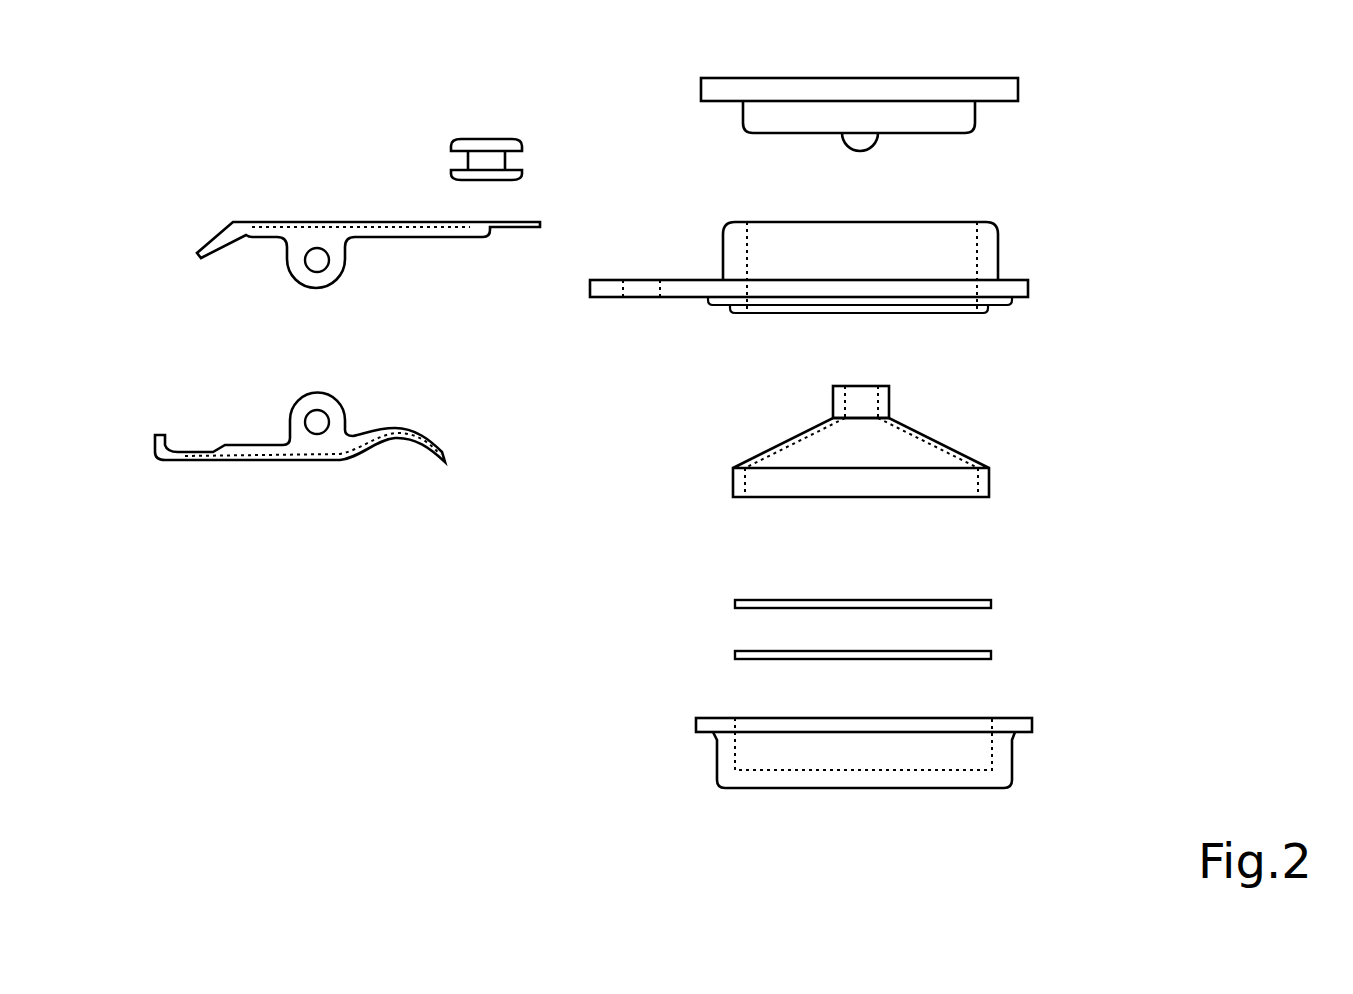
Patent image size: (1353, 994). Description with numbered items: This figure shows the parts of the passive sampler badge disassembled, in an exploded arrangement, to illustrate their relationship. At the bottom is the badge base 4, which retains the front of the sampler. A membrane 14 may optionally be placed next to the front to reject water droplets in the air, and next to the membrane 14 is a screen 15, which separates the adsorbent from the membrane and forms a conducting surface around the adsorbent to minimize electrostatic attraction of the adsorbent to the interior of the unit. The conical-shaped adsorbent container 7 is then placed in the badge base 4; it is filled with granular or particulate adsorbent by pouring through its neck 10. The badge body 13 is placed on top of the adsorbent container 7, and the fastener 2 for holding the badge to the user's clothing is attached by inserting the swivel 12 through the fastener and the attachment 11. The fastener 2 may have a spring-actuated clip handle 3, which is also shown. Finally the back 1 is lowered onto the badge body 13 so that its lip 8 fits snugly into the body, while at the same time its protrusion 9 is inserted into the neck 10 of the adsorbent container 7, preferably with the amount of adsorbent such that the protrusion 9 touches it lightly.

The back 1 is at (985, 78).
The fastener 2 is at (262, 222).
The spring-actuated clip handle 3 is at (268, 465).
The badge base 4 is at (1000, 754).
The adsorbent container 7 is at (915, 450).
The lip 8 is at (962, 115).
The protrusion 9 is at (853, 143).
The neck 10 is at (865, 397).
The attachment 11 is at (597, 298).
The swivel 12 is at (453, 142).
The badge body 13 is at (990, 258).
The membrane 14 is at (991, 655).
The screen 15 is at (991, 604).